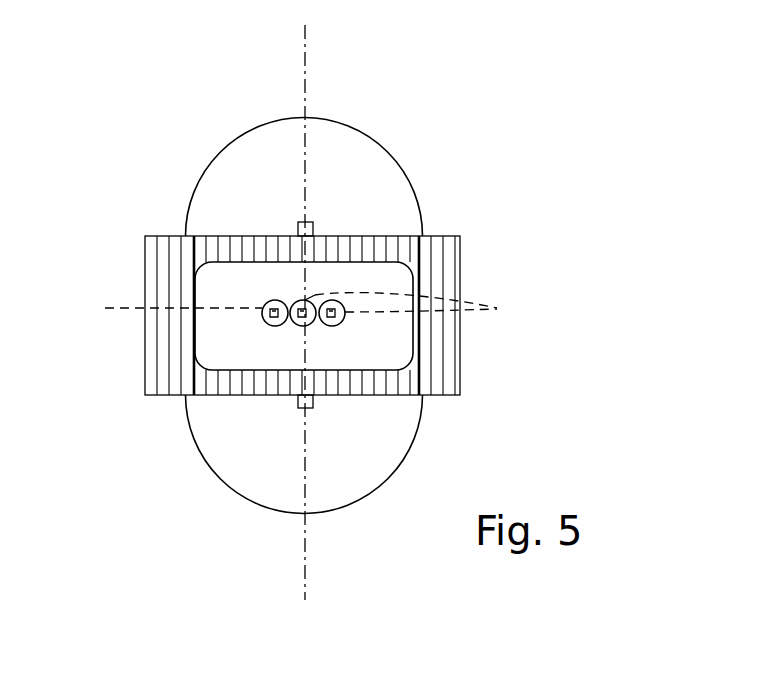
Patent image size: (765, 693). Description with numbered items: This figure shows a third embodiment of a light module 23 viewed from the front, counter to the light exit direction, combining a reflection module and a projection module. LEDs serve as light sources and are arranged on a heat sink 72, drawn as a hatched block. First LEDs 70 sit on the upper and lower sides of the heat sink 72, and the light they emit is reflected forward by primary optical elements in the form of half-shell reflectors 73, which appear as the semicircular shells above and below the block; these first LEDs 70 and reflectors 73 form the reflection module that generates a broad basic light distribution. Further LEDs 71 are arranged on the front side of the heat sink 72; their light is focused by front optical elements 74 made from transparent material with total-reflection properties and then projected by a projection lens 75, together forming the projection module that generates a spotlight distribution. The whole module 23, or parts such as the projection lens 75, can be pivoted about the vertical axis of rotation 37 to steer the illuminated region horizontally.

The light module 23 is at (437, 100).
The vertical axis of rotation 37 is at (306, 40).
The first LEDs 70 is at (310, 219).
The further LEDs 71 is at (304, 308).
The heat sink 72 is at (430, 372).
The half-shell reflectors 73 is at (392, 186).
The front optical elements 74 is at (262, 303).
The projection lens 75 is at (222, 346).